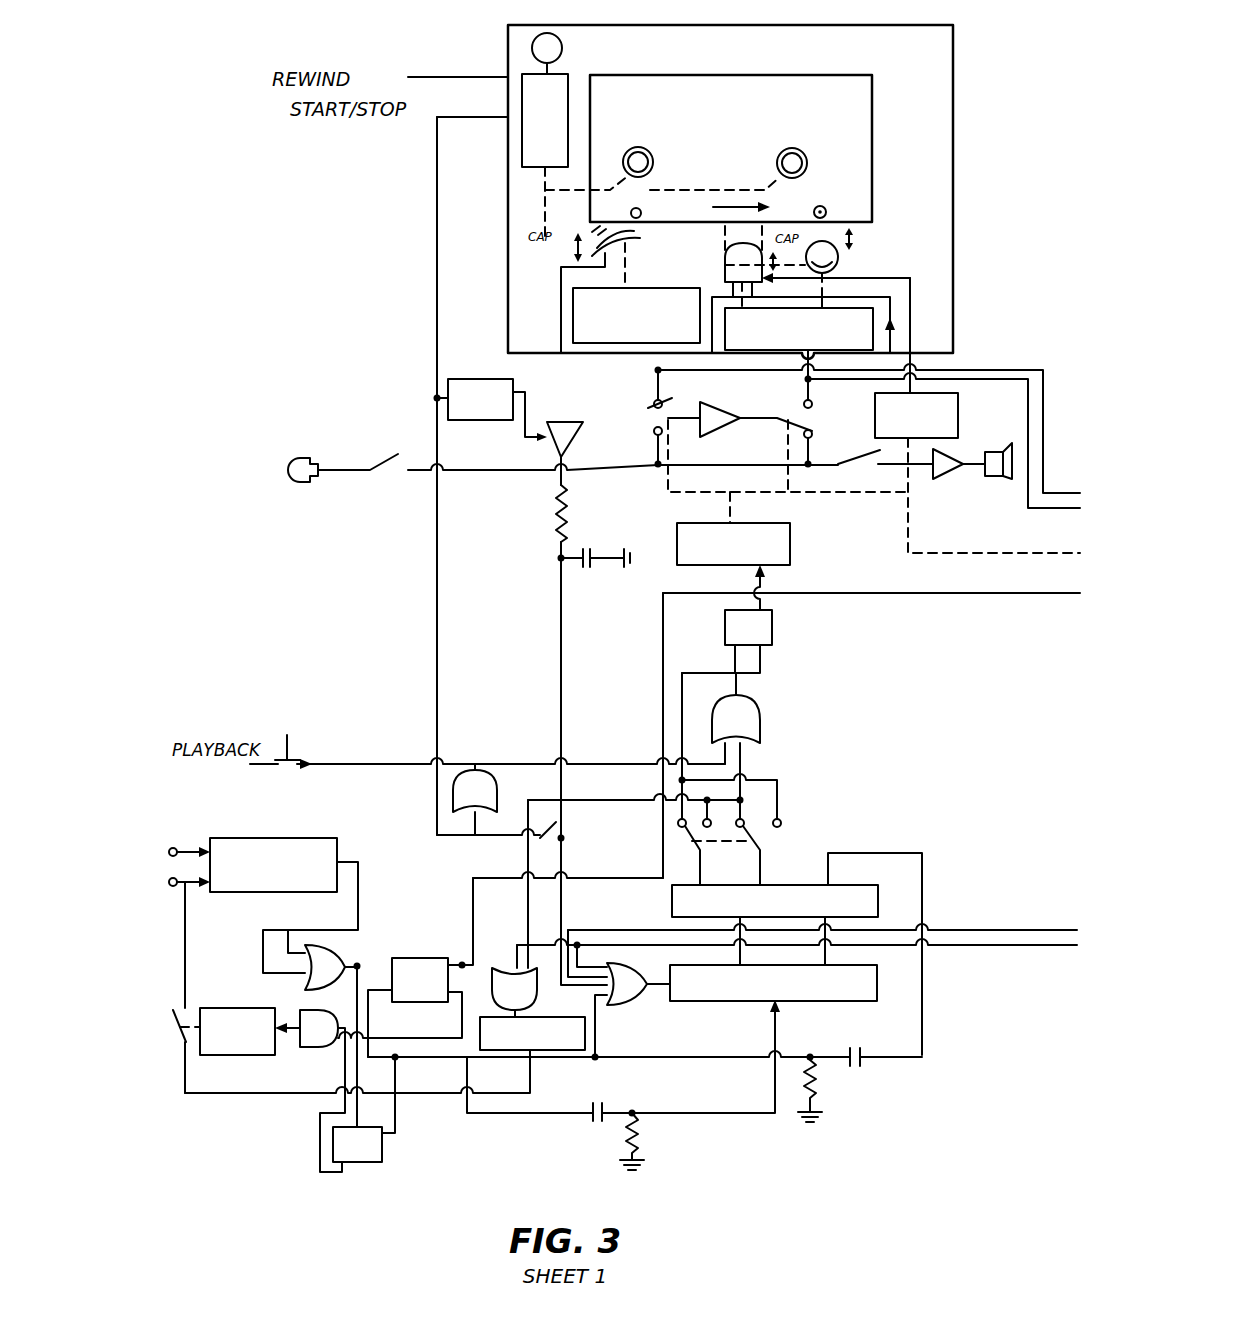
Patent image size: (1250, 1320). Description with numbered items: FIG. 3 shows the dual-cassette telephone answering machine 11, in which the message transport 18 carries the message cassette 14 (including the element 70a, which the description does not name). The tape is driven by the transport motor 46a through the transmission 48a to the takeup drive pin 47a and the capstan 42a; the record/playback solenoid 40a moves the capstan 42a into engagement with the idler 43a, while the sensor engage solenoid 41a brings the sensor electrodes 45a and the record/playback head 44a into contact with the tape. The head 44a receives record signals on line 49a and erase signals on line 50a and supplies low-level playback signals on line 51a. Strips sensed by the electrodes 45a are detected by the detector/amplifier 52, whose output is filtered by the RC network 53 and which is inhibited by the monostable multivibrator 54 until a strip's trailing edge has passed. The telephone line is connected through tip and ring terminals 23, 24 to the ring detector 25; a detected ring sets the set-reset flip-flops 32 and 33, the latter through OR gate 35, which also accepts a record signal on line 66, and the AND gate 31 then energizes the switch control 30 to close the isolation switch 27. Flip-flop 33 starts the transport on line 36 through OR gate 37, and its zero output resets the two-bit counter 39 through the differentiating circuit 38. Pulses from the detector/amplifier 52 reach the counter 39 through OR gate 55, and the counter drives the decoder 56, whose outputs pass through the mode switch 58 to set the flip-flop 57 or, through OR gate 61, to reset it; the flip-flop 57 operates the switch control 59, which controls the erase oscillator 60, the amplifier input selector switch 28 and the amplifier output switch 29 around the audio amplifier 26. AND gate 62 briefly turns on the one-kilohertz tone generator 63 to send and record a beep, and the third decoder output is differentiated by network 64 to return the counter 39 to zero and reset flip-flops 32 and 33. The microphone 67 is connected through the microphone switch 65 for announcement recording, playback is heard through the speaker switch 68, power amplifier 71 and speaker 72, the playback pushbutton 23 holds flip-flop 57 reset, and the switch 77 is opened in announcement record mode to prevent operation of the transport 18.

The tape transport 18 is at (920, 24).
The message cassette 14 is at (828, 76).
The transport motor 46a is at (562, 46).
The transmission 48a is at (568, 110).
The supply reel 70a is at (650, 152).
The takeup drive pin 47a is at (796, 149).
The idler 43a is at (834, 197).
The sensor electrodes 45a is at (638, 244).
The record/playback head 44a is at (722, 260).
The capstan 42a is at (839, 260).
The sensor engage solenoid 41a is at (573, 300).
The record/playback solenoid 40a is at (873, 318).
The record line 49a is at (890, 343).
The erase line 50a is at (953, 342).
The playback line 51a is at (650, 364).
The monostable multivibrator 54 is at (490, 380).
The amplifier input selector switch 28 is at (675, 419).
The audio amplifier 26 is at (722, 402).
The amplifier output switch 29 is at (812, 409).
The erase oscillator 60 is at (958, 422).
The microphone 67 is at (302, 455).
The microphone switch 65 is at (386, 452).
The transport start line 36 is at (440, 437).
The detector/amplifier 52 is at (582, 432).
The RC network 53 is at (576, 512).
The speaker switch 68 is at (862, 460).
The power amplifier 71 is at (945, 480).
The speaker 72 is at (1005, 480).
The switch control 59 is at (790, 548).
The set-reset flip-flop 57 is at (750, 640).
The OR gate 61 is at (756, 710).
The tip terminal and playback pushbutton 23 is at (292, 760).
The OR gate 37 is at (505, 776).
The switch 77 is at (556, 826).
The ring detector 25 is at (250, 838).
The ring terminal 24 is at (178, 892).
The mode switch 58 is at (688, 836).
The decoder 56 is at (877, 893).
The record signal line 66 is at (296, 937).
The set-reset flip-flop 33 is at (402, 958).
The AND gate 62 is at (541, 996).
The OR gate 55 is at (618, 998).
The isolation switch 27 is at (172, 1008).
The switch control 30 is at (215, 1008).
The OR gate 35 is at (320, 989).
The AND gate 31 is at (322, 1050).
The two bit counter 39 is at (838, 1003).
The tone generator 63 is at (548, 1052).
The differentiating network 64 is at (822, 1078).
The telephone answering machine 11 is at (890, 1074).
The differentiating circuit 38 is at (622, 1133).
The set-reset flip-flop 32 is at (382, 1155).